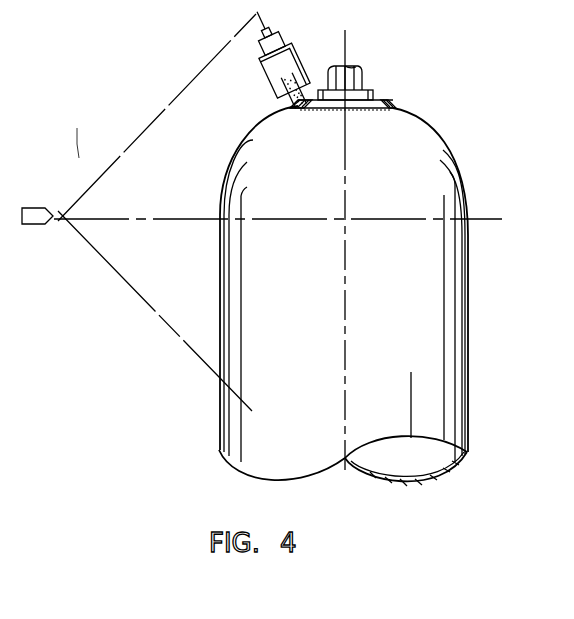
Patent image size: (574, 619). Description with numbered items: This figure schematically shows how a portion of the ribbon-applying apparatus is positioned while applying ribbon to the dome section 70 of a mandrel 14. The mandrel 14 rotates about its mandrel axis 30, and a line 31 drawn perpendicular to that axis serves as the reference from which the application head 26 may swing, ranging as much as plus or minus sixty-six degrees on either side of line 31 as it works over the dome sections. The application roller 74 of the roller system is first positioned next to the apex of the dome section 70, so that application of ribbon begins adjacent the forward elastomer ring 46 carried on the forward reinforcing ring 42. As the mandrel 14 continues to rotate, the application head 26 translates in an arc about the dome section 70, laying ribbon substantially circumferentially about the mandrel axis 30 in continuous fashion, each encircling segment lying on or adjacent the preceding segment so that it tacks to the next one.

The mandrel 14 is at (458, 330).
The application head 26 is at (297, 77).
The mandrel axis 30 is at (347, 45).
The line perpendicular to axis 31 is at (488, 218).
The forward reinforcing ring 42 is at (372, 90).
The forward elastomer ring 46 is at (393, 102).
The dome section 70 is at (433, 132).
The application roller 74 is at (297, 103).